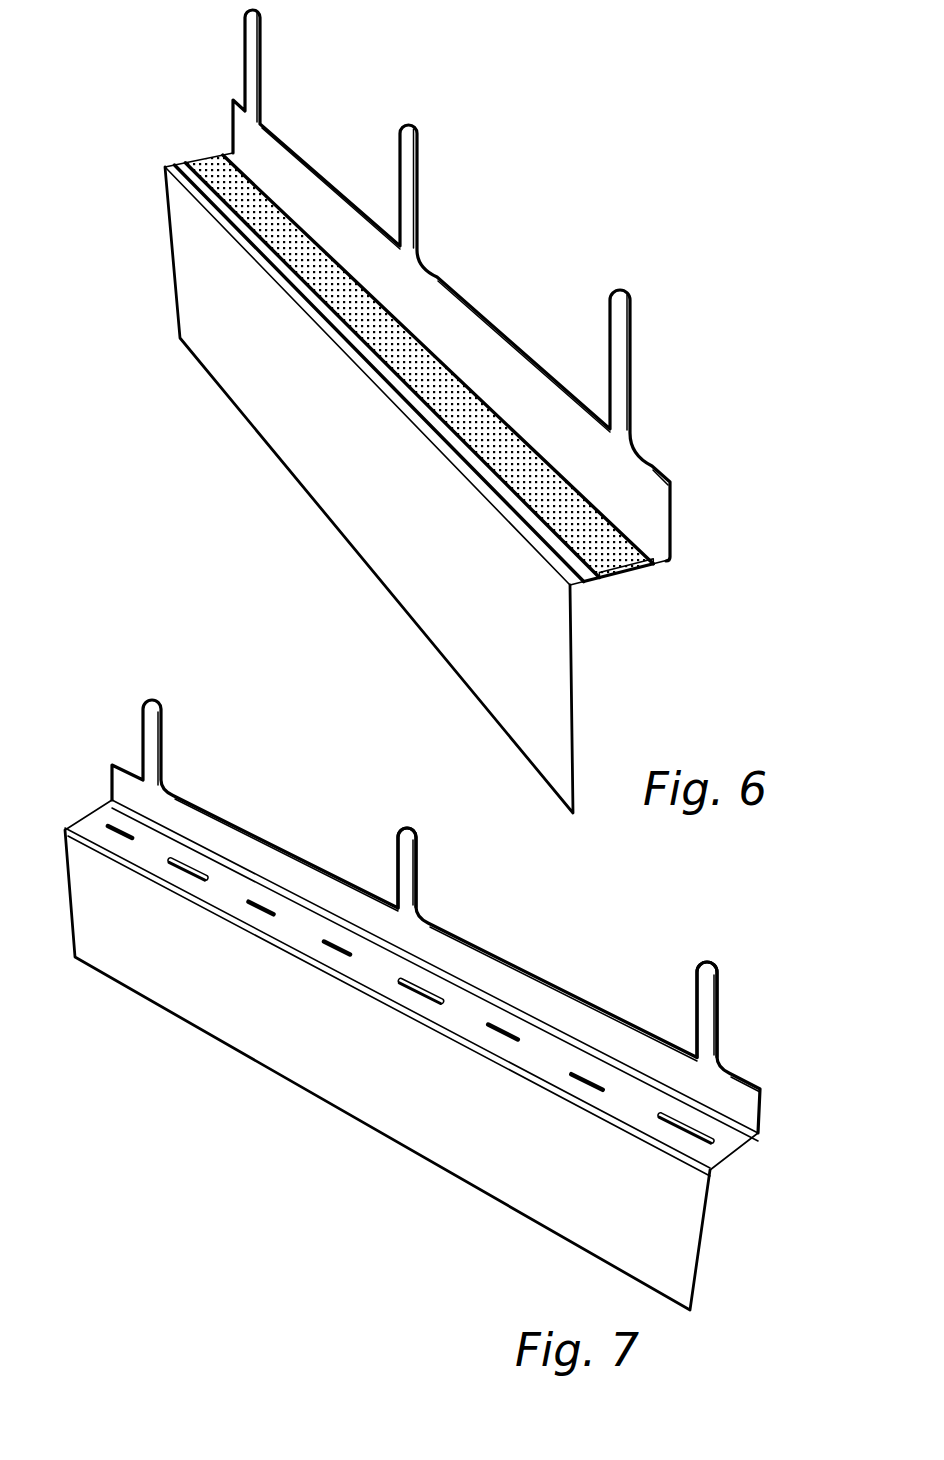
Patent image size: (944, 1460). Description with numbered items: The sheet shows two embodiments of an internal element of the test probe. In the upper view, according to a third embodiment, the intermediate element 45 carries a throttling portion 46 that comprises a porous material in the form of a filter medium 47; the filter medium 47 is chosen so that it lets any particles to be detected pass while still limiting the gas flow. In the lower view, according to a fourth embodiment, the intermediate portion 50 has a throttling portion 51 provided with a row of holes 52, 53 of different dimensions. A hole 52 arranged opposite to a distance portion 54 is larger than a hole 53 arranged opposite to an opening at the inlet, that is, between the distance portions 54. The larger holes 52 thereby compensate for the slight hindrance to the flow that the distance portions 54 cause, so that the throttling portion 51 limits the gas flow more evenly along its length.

In FIG. 6, the intermediate element 45 is at (342, 163).
In FIG. 6, the throttling portion 46 is at (204, 158).
In FIG. 6, the filter medium 47 is at (260, 222).
In FIG. 7, the intermediate portion 50 is at (327, 852).
In FIG. 7, the throttling portion 51 is at (744, 1146).
In FIG. 7, the hole 52 is at (410, 985).
In FIG. 7, the hole 53 is at (330, 943).
In FIG. 7, the distance portion 54 is at (412, 850).